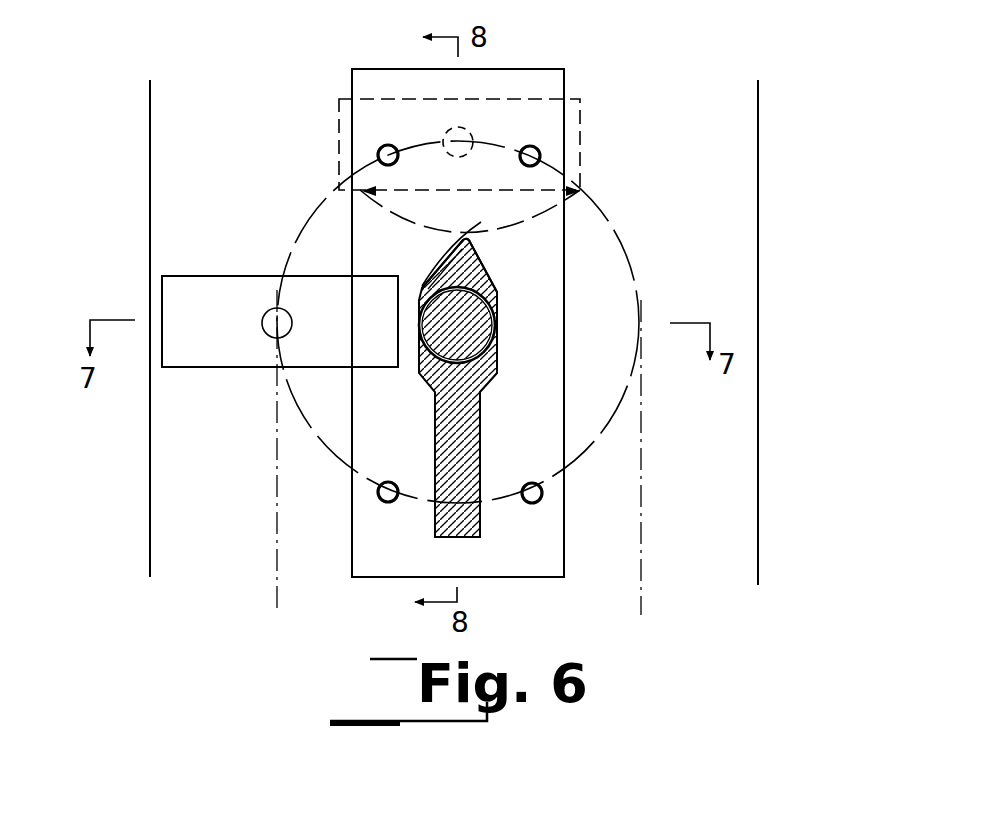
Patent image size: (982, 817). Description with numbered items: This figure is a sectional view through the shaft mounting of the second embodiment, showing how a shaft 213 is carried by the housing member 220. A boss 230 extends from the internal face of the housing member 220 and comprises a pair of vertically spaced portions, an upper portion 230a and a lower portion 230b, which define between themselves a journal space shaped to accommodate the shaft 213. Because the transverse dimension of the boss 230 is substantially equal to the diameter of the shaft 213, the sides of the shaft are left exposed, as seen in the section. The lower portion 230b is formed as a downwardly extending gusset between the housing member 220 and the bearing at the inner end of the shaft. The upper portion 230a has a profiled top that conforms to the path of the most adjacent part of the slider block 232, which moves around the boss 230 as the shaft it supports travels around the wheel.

The shaft 213 is at (483, 322).
The housing member 220 is at (558, 79).
The boss 230 is at (523, 373).
The upper portion of the boss 230a is at (468, 258).
The lower portion of the boss 230b is at (473, 457).
The slider block 232 is at (173, 310).